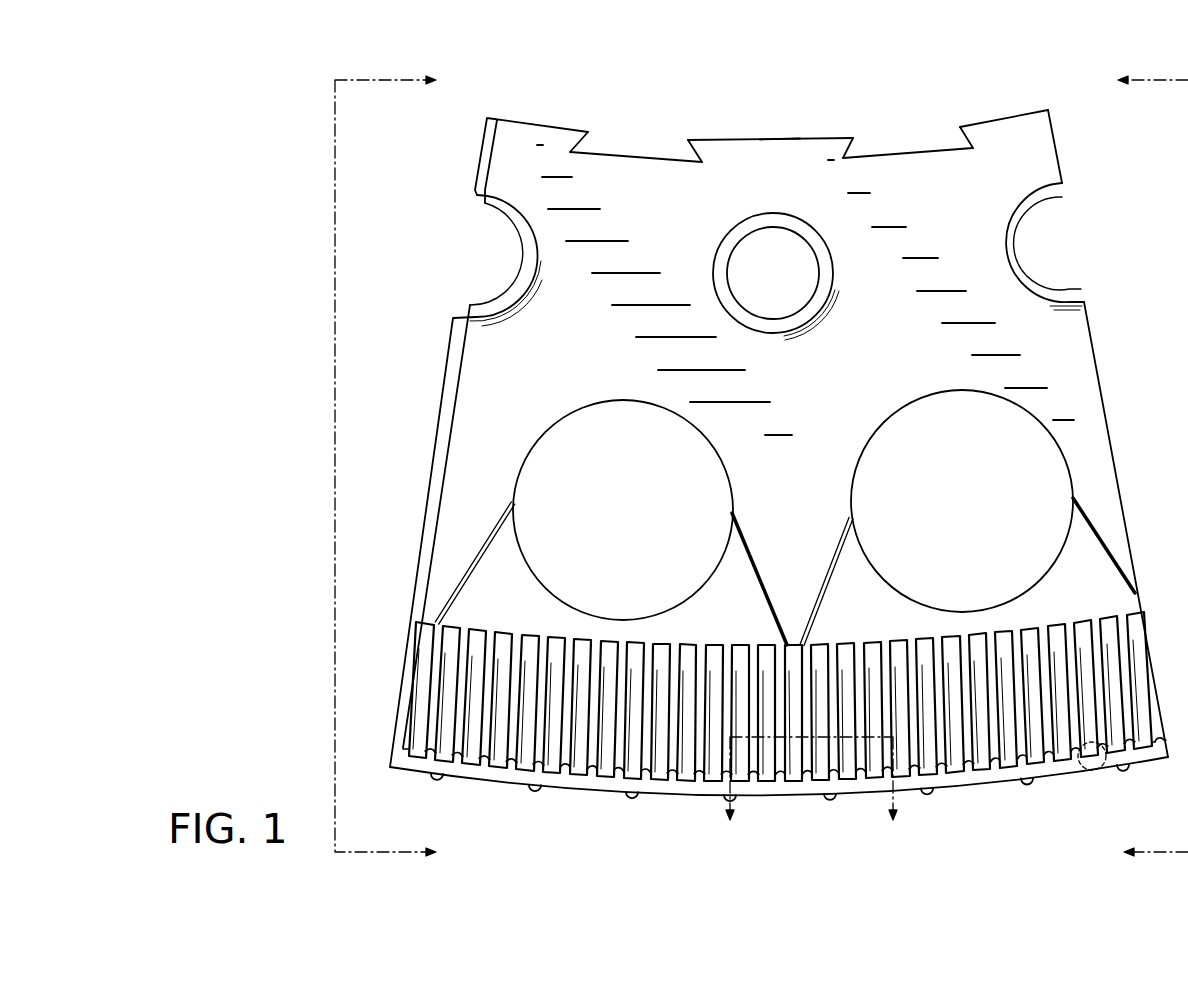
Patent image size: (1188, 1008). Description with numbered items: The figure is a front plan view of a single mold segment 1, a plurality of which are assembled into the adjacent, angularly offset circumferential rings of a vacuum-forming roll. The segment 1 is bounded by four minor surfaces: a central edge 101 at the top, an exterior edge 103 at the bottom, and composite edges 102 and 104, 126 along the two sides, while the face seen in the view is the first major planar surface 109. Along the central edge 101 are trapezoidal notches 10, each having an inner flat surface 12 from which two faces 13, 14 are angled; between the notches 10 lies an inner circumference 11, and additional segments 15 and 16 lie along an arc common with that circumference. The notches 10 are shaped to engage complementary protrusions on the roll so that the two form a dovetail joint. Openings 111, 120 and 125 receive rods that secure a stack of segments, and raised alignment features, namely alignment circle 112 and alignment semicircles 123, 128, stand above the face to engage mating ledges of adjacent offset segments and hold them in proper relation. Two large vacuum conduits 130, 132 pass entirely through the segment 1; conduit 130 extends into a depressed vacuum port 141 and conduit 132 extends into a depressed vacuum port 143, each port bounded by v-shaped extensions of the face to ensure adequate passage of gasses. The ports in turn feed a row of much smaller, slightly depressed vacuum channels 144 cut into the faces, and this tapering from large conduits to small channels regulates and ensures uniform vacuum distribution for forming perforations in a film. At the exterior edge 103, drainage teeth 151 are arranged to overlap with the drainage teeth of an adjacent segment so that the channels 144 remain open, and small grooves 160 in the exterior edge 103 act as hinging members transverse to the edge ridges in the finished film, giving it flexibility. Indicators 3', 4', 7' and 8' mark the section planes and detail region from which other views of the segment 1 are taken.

The single mold segment 1 is at (421, 153).
The trapezoidal notch 10 is at (644, 93).
The inner circumference 11 is at (727, 137).
The inner flat surface 12 is at (642, 152).
The face 13 is at (598, 136).
The face 14 is at (668, 148).
The additional segment 15 is at (543, 120).
The additional segment 16 is at (1000, 117).
The central edge 101 is at (781, 140).
The composite edge 102 is at (1108, 427).
The exterior edge 103 is at (977, 787).
The composite edge 104 is at (433, 458).
The first major planar surface 109 is at (1035, 157).
The opening 111 is at (776, 250).
The alignment circle 112 is at (717, 252).
The opening 120 is at (1027, 231).
The alignment semicircle 123 is at (1020, 263).
The opening 125 is at (515, 229).
The composite edge 126 is at (450, 393).
The alignment semicircle 128 is at (533, 266).
The vacuum conduit 130 is at (947, 526).
The vacuum conduit 132 is at (631, 518).
The vacuum port 141 is at (872, 636).
The vacuum port 143 is at (532, 618).
The vacuum channel 144 is at (532, 767).
The drainage teeth 151 is at (438, 746).
The groove 160 is at (632, 794).
The section line 3 3' is at (1142, 471).
The section line 4 4' is at (399, 472).
The detail circle 7 7' is at (1111, 775).
The section line 8 8' is at (815, 793).